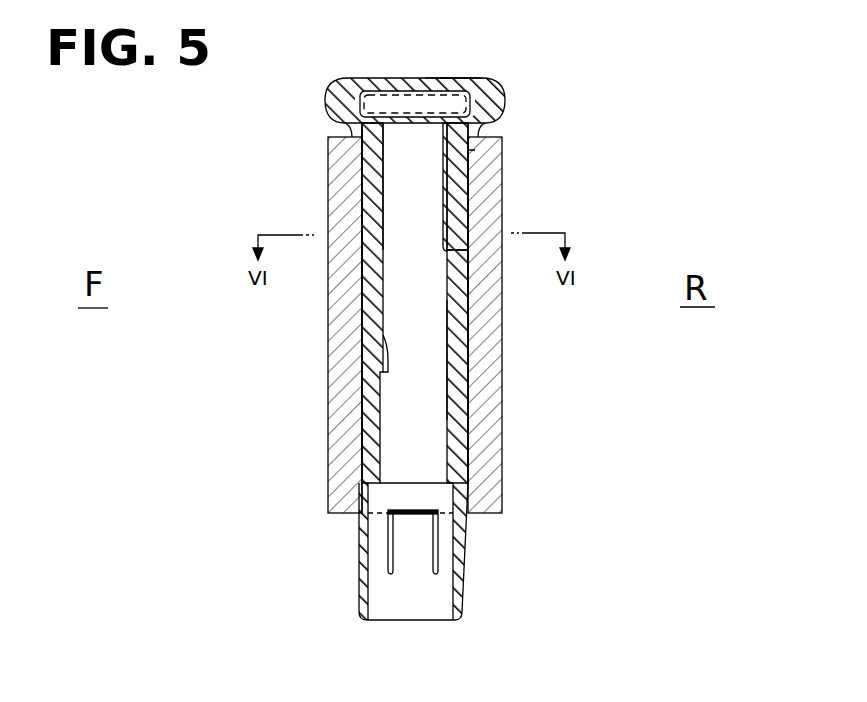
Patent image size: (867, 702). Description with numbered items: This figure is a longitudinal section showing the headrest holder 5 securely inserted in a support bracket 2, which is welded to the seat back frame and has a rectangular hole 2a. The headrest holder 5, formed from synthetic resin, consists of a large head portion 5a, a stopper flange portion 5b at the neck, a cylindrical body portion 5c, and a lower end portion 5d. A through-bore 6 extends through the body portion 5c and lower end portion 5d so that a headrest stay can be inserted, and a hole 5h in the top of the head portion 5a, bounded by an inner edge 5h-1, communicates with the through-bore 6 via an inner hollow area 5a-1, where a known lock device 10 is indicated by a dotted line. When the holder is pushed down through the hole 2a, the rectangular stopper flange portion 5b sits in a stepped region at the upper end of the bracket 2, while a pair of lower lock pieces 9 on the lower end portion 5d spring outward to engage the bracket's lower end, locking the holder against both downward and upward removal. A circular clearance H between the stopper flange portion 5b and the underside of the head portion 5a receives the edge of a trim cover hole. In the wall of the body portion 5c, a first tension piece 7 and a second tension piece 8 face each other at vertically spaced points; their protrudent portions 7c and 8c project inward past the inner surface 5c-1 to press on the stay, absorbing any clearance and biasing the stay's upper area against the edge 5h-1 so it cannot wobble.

The support bracket 2 is at (503, 427).
The rectangular hole 2a is at (363, 423).
The headrest holder 5 is at (468, 388).
The head portion 5a is at (505, 98).
The inner hollow area 5a-1 is at (468, 82).
The stopper flange portion 5b is at (350, 148).
The cylindrical body portion 5c is at (470, 308).
The inner surface 5c-1 is at (440, 337).
The lower end portion 5d is at (468, 570).
The hole 5h is at (410, 82).
The inner edge 5h-1 is at (392, 79).
The through-bore 6 is at (433, 172).
The first tension piece 7 is at (363, 340).
The protrudent portion 7c is at (389, 365).
The second tension piece 8 is at (470, 203).
The protrudent portion 8c is at (445, 247).
The lower lock piece 9 is at (418, 543).
The lock device 10 is at (443, 80).
The circular clearance H is at (340, 132).